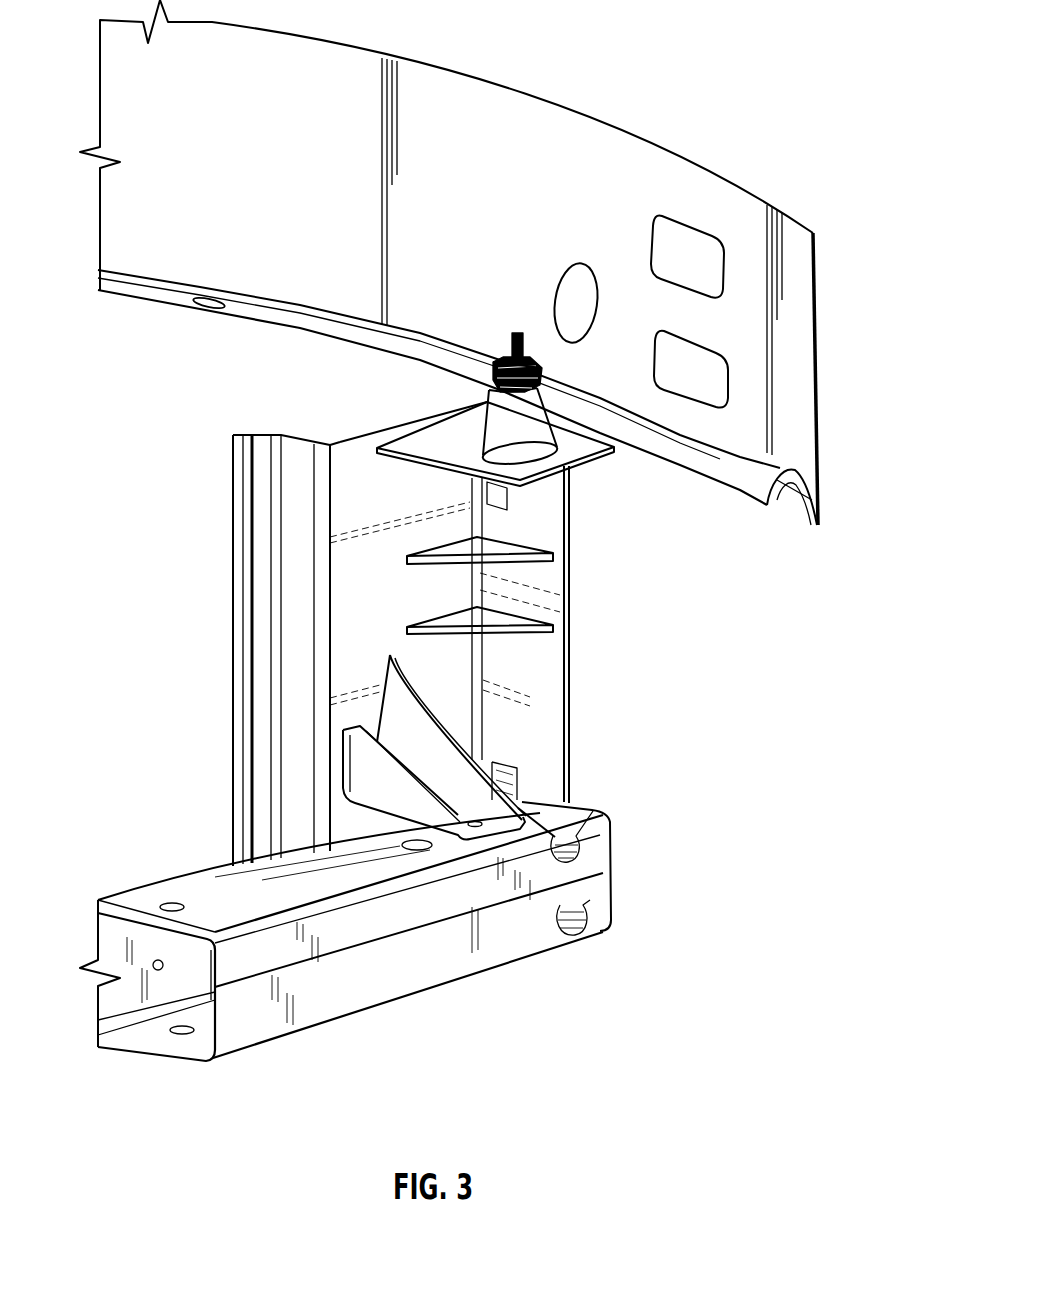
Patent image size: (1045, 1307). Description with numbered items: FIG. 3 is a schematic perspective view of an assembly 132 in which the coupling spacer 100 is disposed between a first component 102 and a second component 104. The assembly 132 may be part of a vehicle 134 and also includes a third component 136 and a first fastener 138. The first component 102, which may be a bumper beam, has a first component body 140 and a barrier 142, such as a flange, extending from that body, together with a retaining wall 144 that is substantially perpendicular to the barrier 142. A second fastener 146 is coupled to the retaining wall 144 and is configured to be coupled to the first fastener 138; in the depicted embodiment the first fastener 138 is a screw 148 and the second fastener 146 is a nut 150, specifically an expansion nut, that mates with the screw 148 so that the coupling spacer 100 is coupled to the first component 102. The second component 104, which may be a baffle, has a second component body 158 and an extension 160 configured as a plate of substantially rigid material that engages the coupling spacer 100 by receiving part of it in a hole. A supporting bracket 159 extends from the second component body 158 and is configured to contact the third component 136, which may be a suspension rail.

The coupling spacer 100 is at (481, 434).
The first component 102 is at (714, 168).
The second component 104 is at (569, 613).
The assembly 132 is at (619, 40).
The vehicle 134 is at (208, 504).
The third component 136 is at (392, 1010).
The first fastener 138 is at (520, 330).
The first component body 140 is at (818, 292).
The barrier 142 is at (818, 525).
The retaining wall 144 is at (275, 320).
The second fastener 146 is at (540, 378).
The screw 148 is at (510, 340).
The nut 150 is at (500, 352).
The second component body 158 is at (348, 457).
The supporting bracket 159 is at (474, 806).
The extension 160 is at (573, 470).